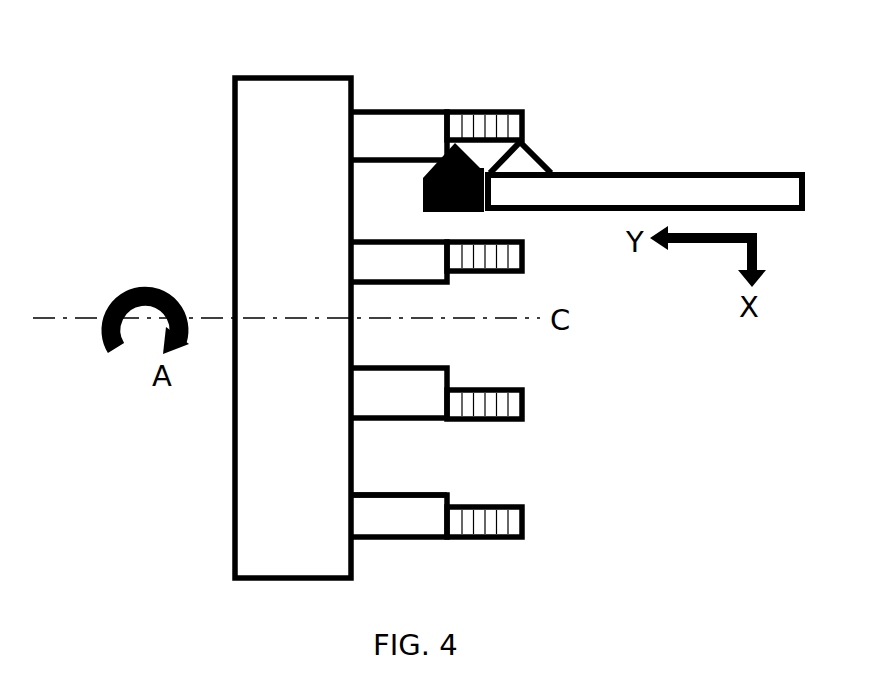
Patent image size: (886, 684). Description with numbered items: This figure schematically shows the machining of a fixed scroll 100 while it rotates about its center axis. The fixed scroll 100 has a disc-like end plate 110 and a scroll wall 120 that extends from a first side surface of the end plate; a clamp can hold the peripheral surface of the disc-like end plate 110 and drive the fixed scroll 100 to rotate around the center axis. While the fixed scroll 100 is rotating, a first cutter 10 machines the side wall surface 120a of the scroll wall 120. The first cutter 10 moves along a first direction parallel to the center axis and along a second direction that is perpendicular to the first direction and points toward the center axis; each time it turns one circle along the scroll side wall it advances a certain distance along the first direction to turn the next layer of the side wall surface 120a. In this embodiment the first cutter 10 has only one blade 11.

The fixed scroll 100 is at (329, 318).
The disc-like end plate 110 is at (285, 95).
The scroll wall 120 is at (405, 523).
The side wall surface 120a is at (413, 492).
The first cutter 10 is at (663, 190).
The blade 11 is at (525, 168).